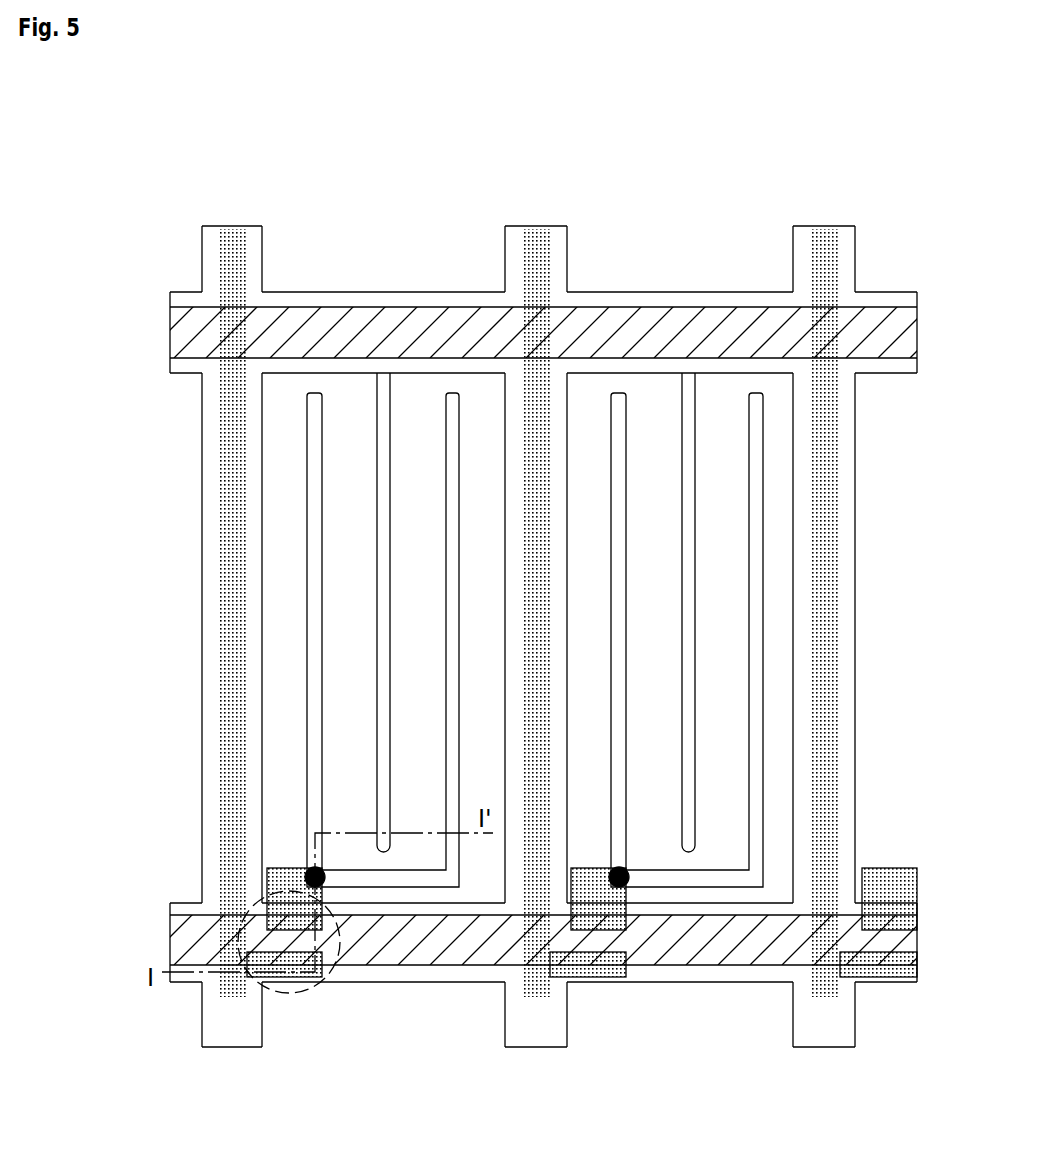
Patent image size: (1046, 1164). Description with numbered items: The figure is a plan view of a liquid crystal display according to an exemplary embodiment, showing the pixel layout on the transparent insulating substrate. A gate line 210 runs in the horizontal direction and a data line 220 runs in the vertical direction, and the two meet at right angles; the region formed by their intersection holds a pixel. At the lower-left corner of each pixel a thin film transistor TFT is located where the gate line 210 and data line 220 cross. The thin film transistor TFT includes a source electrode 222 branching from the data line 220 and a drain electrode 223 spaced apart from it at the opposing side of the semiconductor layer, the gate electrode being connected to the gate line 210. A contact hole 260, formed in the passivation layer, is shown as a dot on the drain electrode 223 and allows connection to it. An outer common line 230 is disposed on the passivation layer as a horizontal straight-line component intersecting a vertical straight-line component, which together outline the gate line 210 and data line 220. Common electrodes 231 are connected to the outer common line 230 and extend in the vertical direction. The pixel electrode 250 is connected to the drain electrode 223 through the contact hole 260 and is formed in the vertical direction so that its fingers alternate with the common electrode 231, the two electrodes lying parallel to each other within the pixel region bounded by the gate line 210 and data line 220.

The gate line 210 is at (191, 337).
The data line 220 is at (222, 260).
The source electrode 222 is at (287, 977).
The drain electrode 223 is at (270, 883).
The outer common line 230 is at (263, 268).
The common electrode 231 is at (383, 519).
The pixel electrode 250 is at (315, 689).
The contact hole 260 is at (307, 870).
The thin film transistor TFT is at (330, 977).